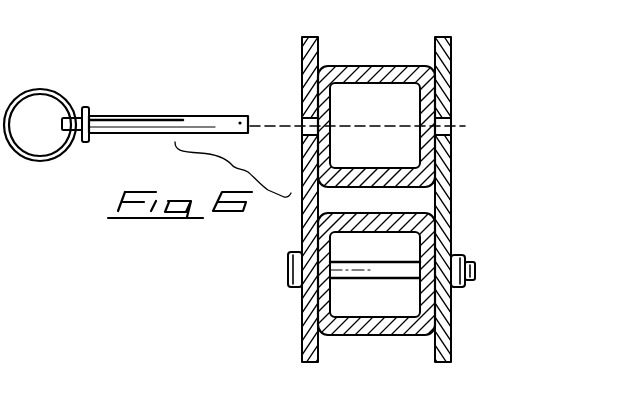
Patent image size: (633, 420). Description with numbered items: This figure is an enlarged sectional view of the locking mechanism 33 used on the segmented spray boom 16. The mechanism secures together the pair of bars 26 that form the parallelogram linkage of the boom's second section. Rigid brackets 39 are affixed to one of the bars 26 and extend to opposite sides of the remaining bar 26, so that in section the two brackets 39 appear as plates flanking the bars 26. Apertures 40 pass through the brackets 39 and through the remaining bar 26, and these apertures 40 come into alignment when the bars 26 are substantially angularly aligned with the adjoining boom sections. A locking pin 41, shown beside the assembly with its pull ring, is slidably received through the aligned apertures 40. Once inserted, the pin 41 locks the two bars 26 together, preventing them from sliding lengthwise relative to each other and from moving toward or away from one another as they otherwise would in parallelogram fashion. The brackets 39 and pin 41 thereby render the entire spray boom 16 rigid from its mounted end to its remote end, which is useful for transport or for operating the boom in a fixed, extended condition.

The spray boom 16 is at (316, 203).
The bars 26 is at (398, 66).
The locking mechanism 33 is at (302, 235).
The rigid brackets 39 is at (310, 75).
The apertures 40 is at (419, 120).
The locking pin 41 is at (233, 123).